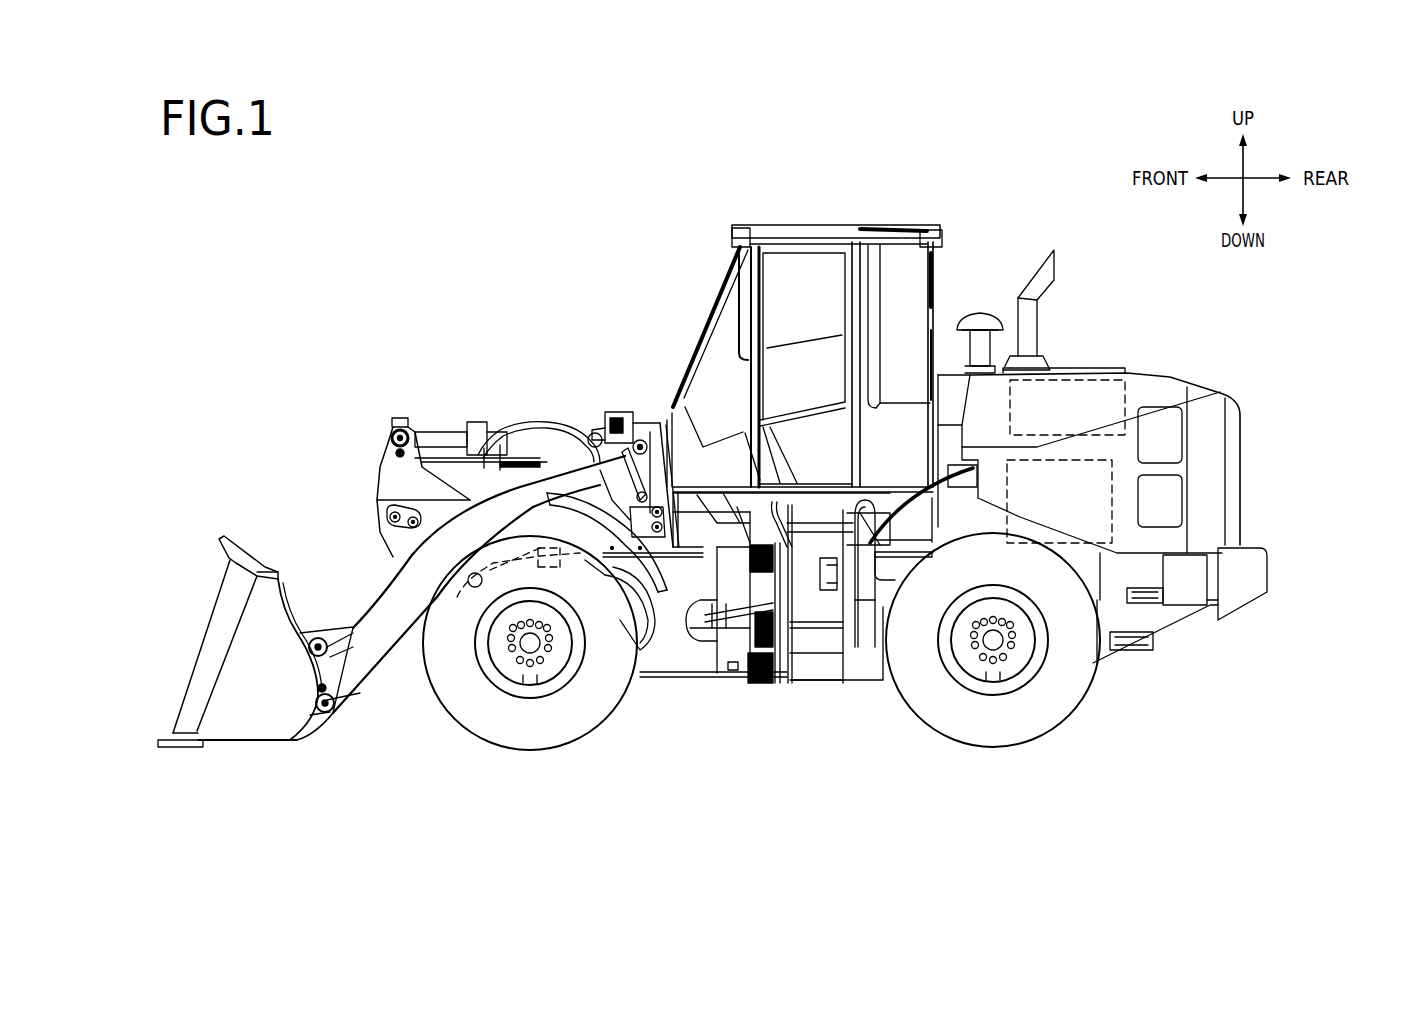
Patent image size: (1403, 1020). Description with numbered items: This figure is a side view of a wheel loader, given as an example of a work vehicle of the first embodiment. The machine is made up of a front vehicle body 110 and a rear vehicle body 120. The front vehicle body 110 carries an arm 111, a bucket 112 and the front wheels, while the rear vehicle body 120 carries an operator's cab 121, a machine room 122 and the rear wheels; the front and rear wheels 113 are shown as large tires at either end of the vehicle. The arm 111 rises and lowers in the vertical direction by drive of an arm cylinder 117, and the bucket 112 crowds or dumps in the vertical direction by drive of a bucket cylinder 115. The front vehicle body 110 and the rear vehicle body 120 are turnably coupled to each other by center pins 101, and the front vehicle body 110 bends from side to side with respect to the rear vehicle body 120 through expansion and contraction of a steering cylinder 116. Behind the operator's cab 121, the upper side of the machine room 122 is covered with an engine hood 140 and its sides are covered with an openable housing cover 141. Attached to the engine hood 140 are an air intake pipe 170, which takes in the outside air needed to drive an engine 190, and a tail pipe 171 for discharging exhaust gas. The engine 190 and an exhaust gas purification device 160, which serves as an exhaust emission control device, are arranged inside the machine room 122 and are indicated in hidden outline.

The center pins 101 is at (757, 560).
The front vehicle body 110 is at (645, 411).
The arm 111 is at (368, 668).
The bucket 112 is at (243, 713).
The wheels 113 is at (538, 736).
The bucket cylinder 115 is at (498, 437).
The steering cylinder 116 is at (723, 632).
The arm cylinder 117 is at (582, 556).
The rear vehicle body 120 is at (1072, 740).
The operator's cab 121 is at (858, 226).
The machine room 122 is at (1167, 403).
The engine hood 140 is at (1093, 362).
The housing cover 141 is at (1145, 385).
The exhaust gas purification device 160 is at (1055, 368).
The air intake pipe 170 is at (980, 313).
The tail pipe 171 is at (1040, 290).
The engine 190 is at (1112, 507).